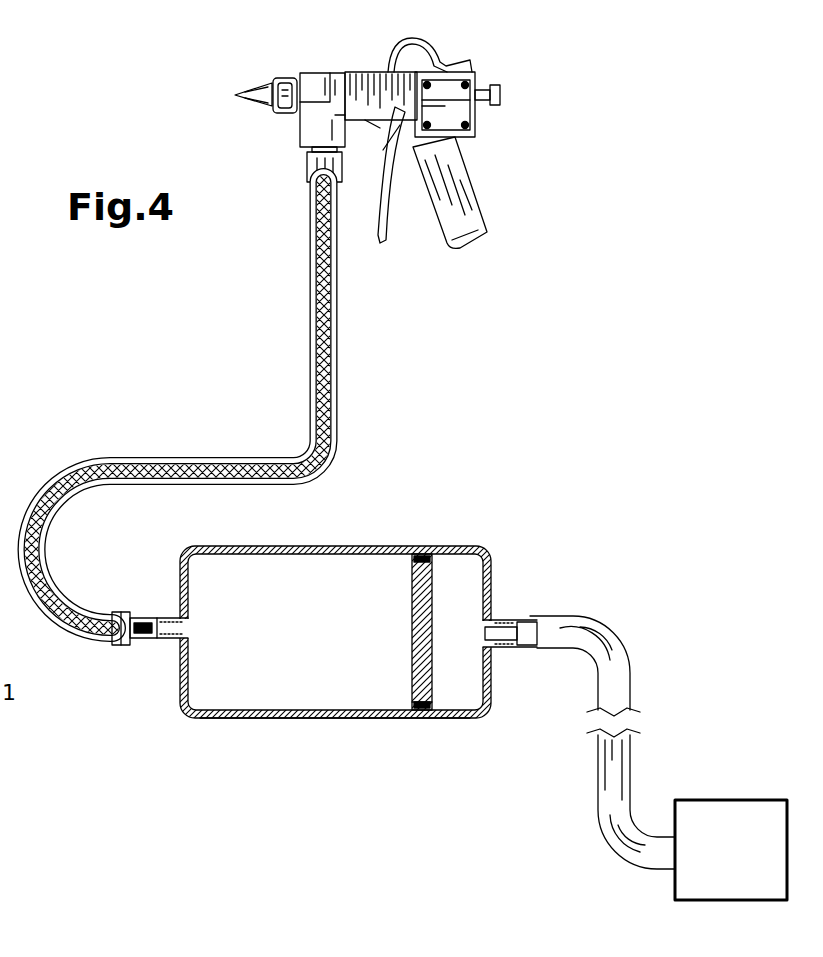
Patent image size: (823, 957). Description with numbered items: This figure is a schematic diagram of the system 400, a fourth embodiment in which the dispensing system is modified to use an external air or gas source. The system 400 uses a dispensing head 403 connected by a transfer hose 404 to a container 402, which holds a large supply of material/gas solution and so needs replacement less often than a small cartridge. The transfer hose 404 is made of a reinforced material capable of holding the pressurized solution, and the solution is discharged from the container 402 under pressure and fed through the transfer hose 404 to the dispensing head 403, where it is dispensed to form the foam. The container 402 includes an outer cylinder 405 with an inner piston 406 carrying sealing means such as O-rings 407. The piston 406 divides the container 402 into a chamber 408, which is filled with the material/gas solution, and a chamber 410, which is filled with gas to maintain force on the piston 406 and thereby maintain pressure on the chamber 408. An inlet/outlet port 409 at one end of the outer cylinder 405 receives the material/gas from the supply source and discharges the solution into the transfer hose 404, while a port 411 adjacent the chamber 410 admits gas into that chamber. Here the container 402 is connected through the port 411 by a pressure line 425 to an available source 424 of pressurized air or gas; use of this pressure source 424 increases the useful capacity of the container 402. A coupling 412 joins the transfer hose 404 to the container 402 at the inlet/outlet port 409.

The system 400 is at (417, 365).
The container 402 is at (375, 548).
The dispensing head 403 is at (380, 70).
The transfer hose 404 is at (318, 346).
The outer cylinder 405 is at (267, 720).
The inner piston 406 is at (433, 690).
The O-rings 407 is at (420, 713).
The chamber 408 is at (282, 582).
The inlet/outlet port 409 is at (165, 617).
The chamber 410 is at (460, 583).
The port 411 is at (510, 648).
The hose coupling 412 is at (135, 645).
The source of pressurized air or gas 424 is at (728, 820).
The pressure line 425 is at (615, 758).